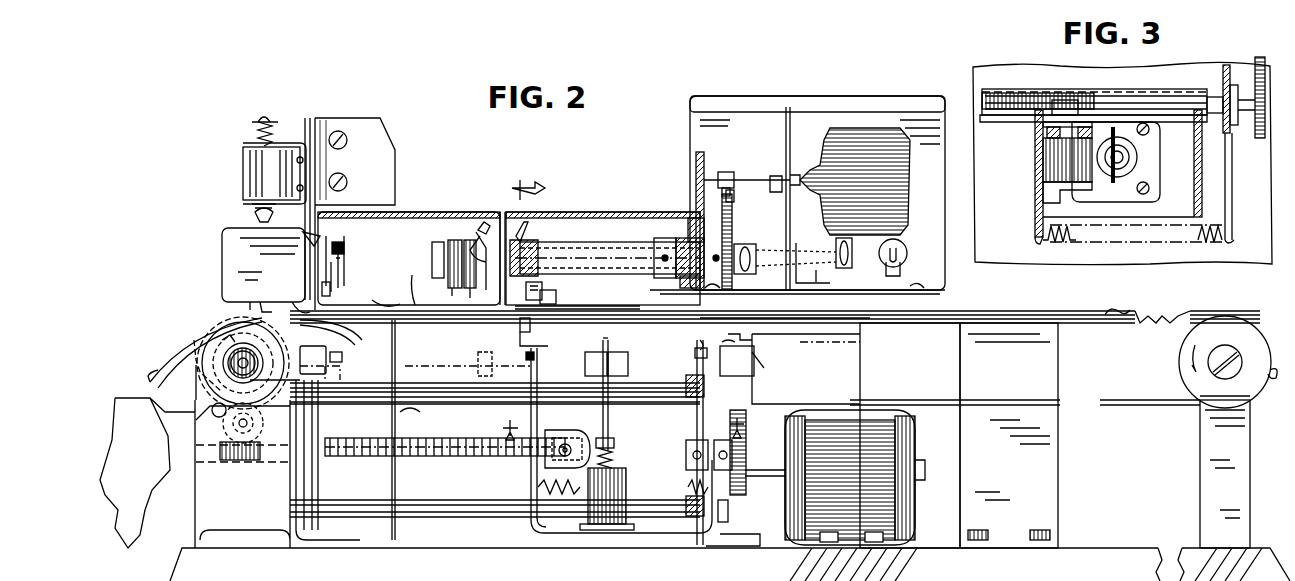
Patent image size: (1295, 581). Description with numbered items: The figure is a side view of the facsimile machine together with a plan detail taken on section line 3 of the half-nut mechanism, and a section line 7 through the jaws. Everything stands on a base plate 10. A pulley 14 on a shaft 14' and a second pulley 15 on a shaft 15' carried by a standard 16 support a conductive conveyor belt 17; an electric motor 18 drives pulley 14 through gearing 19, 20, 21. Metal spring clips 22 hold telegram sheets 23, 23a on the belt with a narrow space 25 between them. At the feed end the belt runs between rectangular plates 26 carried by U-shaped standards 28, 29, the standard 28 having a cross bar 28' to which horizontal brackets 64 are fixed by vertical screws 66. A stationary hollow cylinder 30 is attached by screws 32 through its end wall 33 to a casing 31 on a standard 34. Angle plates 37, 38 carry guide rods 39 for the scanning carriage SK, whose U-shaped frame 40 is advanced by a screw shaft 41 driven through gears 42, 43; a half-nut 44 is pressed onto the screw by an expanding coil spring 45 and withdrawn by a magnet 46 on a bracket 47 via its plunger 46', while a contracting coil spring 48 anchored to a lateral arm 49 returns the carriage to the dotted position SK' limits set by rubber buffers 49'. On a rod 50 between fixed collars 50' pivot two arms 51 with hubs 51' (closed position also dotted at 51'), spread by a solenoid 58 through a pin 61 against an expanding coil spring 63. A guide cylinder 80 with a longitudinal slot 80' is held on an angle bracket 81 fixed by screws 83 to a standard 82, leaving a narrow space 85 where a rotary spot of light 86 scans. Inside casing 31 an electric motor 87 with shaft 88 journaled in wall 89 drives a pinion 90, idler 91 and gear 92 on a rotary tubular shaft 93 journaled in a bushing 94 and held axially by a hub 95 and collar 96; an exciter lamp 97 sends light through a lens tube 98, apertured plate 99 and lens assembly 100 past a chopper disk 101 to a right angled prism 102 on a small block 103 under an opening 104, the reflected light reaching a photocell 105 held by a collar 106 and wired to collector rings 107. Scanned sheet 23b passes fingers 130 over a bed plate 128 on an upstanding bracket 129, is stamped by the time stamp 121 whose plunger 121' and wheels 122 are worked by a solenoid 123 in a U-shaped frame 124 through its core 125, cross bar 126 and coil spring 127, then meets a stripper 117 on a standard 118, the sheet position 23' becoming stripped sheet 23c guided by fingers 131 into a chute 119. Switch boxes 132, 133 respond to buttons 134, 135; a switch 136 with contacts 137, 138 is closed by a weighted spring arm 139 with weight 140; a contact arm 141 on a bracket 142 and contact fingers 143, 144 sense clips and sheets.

In FIG. 2, the section line 3 is at (619, 440).
In FIG. 2, the section line 7 is at (518, 188).
In FIG. 2, the base plate 10 is at (1082, 560).
In FIG. 3, the base plate 10 is at (1014, 74).
In FIG. 2, the pulley 14 is at (221, 362).
In FIG. 2, the pulley shaft 14' is at (244, 356).
In FIG. 2, the second pulley 15 is at (1228, 348).
In FIG. 2, the pulley shaft 15' is at (1235, 353).
In FIG. 2, the standard 16 is at (1210, 524).
In FIG. 2, the conveyor belt 17 is at (450, 316).
In FIG. 2, the electric motor 18 is at (882, 446).
In FIG. 2, the worm or spiral pinion 19 is at (248, 465).
In FIG. 2, the gear 20 is at (243, 466).
In FIG. 2, the gear 21 is at (194, 388).
In FIG. 2, the metal spring clips 22 is at (214, 415).
In FIG. 2, the telegram sheets 23 is at (775, 324).
In FIG. 2, the sheet position before stripping 23' is at (191, 366).
In FIG. 2, the telegram sheet 23a is at (606, 312).
In FIG. 2, the scanned sheet 23b is at (389, 297).
In FIG. 2, the stripped sheet 23c is at (150, 380).
In FIG. 2, the narrow space 25 is at (898, 306).
In FIG. 2, the rectangular plates 26 is at (1140, 325).
In FIG. 2, the U-shaped standard 28 is at (802, 369).
In FIG. 2, the cross bar 28' is at (824, 340).
In FIG. 2, the U-shaped standard 29 is at (1050, 385).
In FIG. 2, the stationary hollow cylinder or drum 30 is at (578, 213).
In FIG. 2, the casing 31 is at (886, 130).
In FIG. 2, the screws 32 is at (690, 290).
In FIG. 2, the end wall 33 is at (688, 225).
In FIG. 2, the standard 34 is at (852, 386).
In FIG. 2, the angle plate 37 is at (322, 484).
In FIG. 2, the angle plate 38 is at (718, 530).
In FIG. 3, the angle plate 38 is at (1226, 82).
In FIG. 2, the guide rods 39 is at (402, 384).
In FIG. 3, the guide rods 39 is at (995, 100).
In FIG. 2, the U-shaped frame 40 is at (570, 538).
In FIG. 3, the U-shaped frame 40 is at (1036, 200).
In FIG. 2, the screw shaft 41 is at (458, 458).
In FIG. 3, the screw shaft 41 is at (1030, 97).
In FIG. 2, the gear 42 is at (748, 495).
In FIG. 2, the gear 43 is at (748, 448).
In FIG. 3, the gear 43 is at (1260, 58).
In FIG. 3, the half-nut 44 is at (1068, 106).
In FIG. 3, the expanding coil spring 45 is at (1046, 140).
In FIG. 3, the magnet 46 is at (1046, 160).
In FIG. 3, the plunger 46' is at (1046, 133).
In FIG. 2, the bracket 47 is at (555, 456).
In FIG. 3, the bracket 47 is at (1060, 192).
In FIG. 2, the contracting coil spring 48 is at (536, 488).
In FIG. 3, the contracting coil spring 48 is at (1064, 242).
In FIG. 2, the lateral arm or extension 49 is at (718, 442).
In FIG. 3, the lateral arm or extension 49 is at (1242, 188).
In FIG. 2, the rubber buffers 49' is at (730, 471).
In FIG. 3, the rubber buffers 49' is at (1133, 162).
In FIG. 2, the rod 50 is at (572, 359).
In FIG. 2, the fixed collars 50' is at (605, 357).
In FIG. 2, the arms or jaws 51 is at (667, 395).
In FIG. 3, the arms or jaws 51 is at (1126, 157).
In FIG. 2, the hub / closed position 51' is at (616, 344).
In FIG. 2, the solenoid 58 is at (604, 528).
In FIG. 3, the solenoid 58 is at (1110, 168).
In FIG. 2, the pin 61 is at (616, 444).
In FIG. 2, the expanding coil spring 63 is at (614, 466).
In FIG. 2, the horizontal brackets 64 is at (522, 343).
In FIG. 2, the vertical screws 66 is at (744, 340).
In FIG. 2, the guide cylinder 80 is at (409, 245).
In FIG. 2, the longitudinal slot 80' is at (410, 283).
In FIG. 2, the angle bracket 81 is at (308, 122).
In FIG. 2, the standard 82 is at (378, 150).
In FIG. 2, the screws 83 is at (342, 134).
In FIG. 2, the narrow space 85 is at (490, 290).
In FIG. 2, the rotary spot of light 86 is at (500, 215).
In FIG. 2, the electric motor 87 is at (820, 150).
In FIG. 2, the extended shaft 88 is at (752, 180).
In FIG. 2, the casing wall 89 is at (696, 176).
In FIG. 2, the pinion 90 is at (726, 172).
In FIG. 2, the idler 91 is at (734, 194).
In FIG. 2, the gear 92 is at (732, 236).
In FIG. 2, the rotary tubular shaft 93 is at (590, 250).
In FIG. 2, the bushing 94 is at (665, 244).
In FIG. 2, the hub 95 is at (708, 244).
In FIG. 2, the collar 96 is at (664, 278).
In FIG. 2, the exciter lamp 97 is at (906, 252).
In FIG. 2, the lens tube 98 is at (816, 263).
In FIG. 2, the apertured plate 99 is at (792, 256).
In FIG. 2, the lens assembly 100 is at (742, 270).
In FIG. 2, the interrupter or chopper disk 101 is at (784, 134).
In FIG. 2, the right angled prism 102 is at (530, 250).
In FIG. 2, the small block 103 is at (509, 326).
In FIG. 2, the opening 104 is at (522, 236).
In FIG. 2, the photocell 105 is at (482, 232).
In FIG. 2, the band or collar 106 is at (462, 294).
In FIG. 2, the insulated collector rings 107 is at (445, 242).
In FIG. 2, the stripper 117 is at (175, 412).
In FIG. 2, the standard 118 is at (205, 497).
In FIG. 2, the chute or receptacle 119 is at (130, 405).
In FIG. 2, the time stamp 121 is at (250, 265).
In FIG. 2, the plunger 121' is at (239, 217).
In FIG. 2, the projecting part (stamping wheels) 122 is at (274, 293).
In FIG. 2, the solenoid 123 is at (252, 170).
In FIG. 2, the U-shaped frame 124 is at (283, 142).
In FIG. 2, the movable core 125 is at (258, 118).
In FIG. 2, the cross bar 126 is at (253, 206).
In FIG. 2, the coil spring 127 is at (256, 134).
In FIG. 2, the bed plate 128 is at (294, 316).
In FIG. 2, the upstanding bracket 129 is at (265, 372).
In FIG. 2, the fingers 130 is at (356, 338).
In FIG. 2, the fingers 131 is at (198, 330).
In FIG. 2, the switch box 132 is at (321, 443).
In FIG. 2, the switch box 133 is at (738, 356).
In FIG. 2, the insulated button or lug 134 is at (528, 358).
In FIG. 2, the insulated button or lug 135 is at (683, 345).
In FIG. 2, the switch 136 is at (346, 236).
In FIG. 2, the insulated contact 137 is at (344, 260).
In FIG. 2, the insulated contact 138 is at (340, 280).
In FIG. 2, the spring arm 139 is at (314, 246).
In FIG. 2, the weight 140 is at (330, 292).
In FIG. 2, the insulated contact arm 141 is at (526, 286).
In FIG. 2, the bracket 142 is at (556, 298).
In FIG. 2, the contact finger 143 is at (250, 325).
In FIG. 2, the contact finger 144 is at (327, 335).
In FIG. 2, the scanning carriage SK is at (467, 368).
In FIG. 2, the scanning carriage end position SK' is at (338, 362).